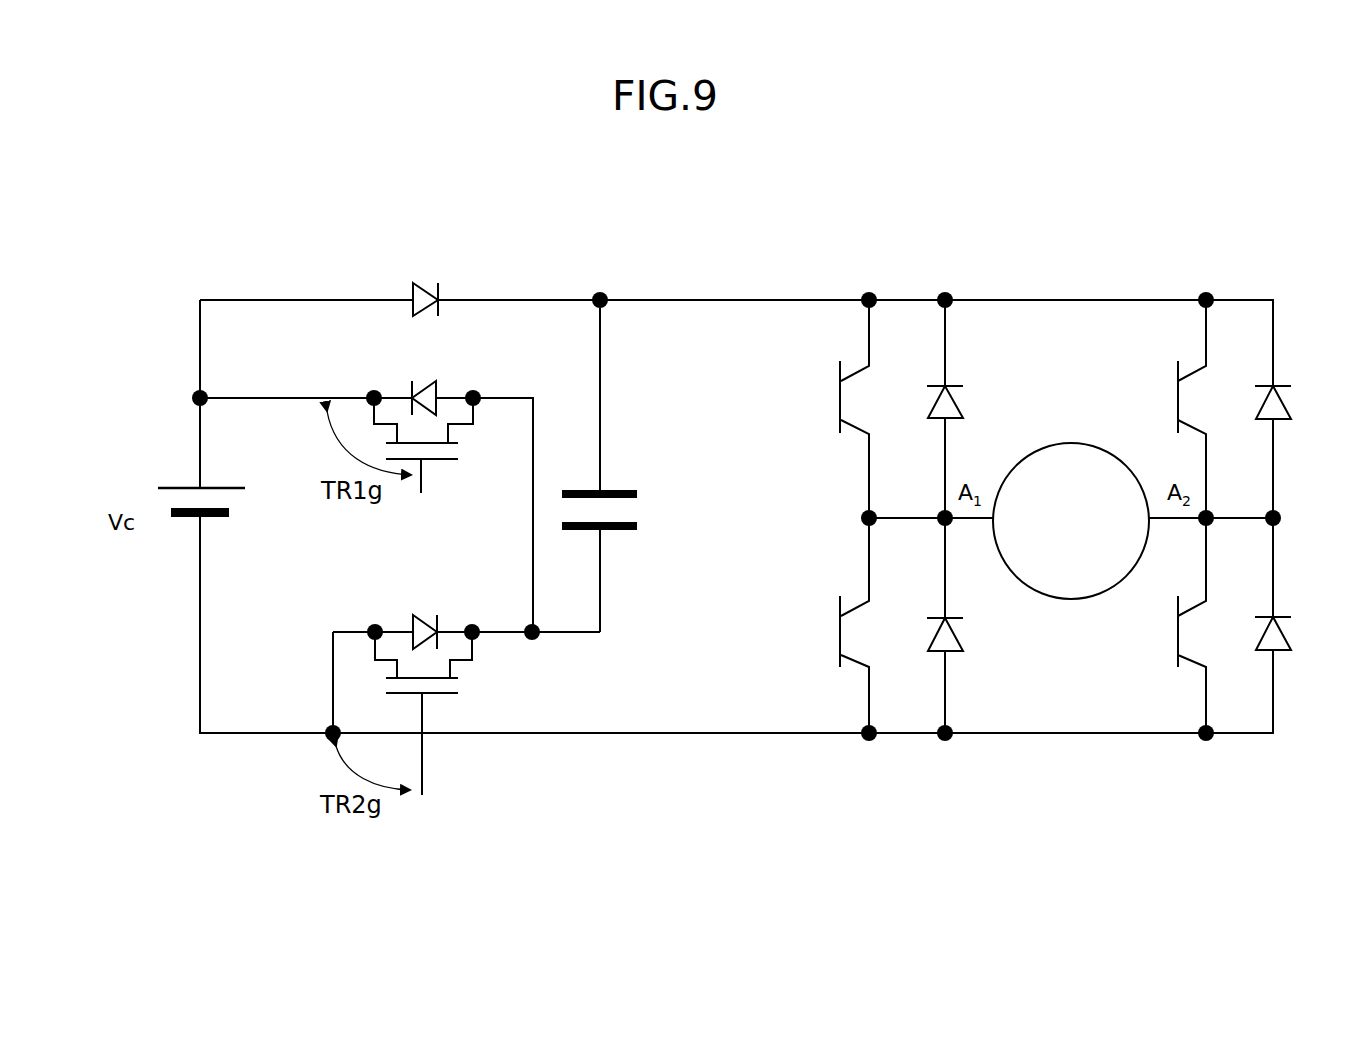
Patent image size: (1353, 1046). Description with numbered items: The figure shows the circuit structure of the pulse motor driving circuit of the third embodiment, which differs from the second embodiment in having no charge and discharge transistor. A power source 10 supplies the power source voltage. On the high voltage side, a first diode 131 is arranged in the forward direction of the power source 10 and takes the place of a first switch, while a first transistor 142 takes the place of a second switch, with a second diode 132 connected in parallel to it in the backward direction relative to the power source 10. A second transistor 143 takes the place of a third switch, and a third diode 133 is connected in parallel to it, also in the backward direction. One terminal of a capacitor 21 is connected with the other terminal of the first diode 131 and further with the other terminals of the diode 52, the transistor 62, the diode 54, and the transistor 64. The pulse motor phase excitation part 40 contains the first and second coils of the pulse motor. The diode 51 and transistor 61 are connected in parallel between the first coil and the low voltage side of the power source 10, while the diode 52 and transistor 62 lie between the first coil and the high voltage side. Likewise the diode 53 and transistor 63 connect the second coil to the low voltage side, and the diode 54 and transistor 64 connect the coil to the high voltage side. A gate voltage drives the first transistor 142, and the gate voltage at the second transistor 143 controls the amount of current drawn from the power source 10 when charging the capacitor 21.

The power source 10 is at (168, 488).
The capacitor 21 is at (628, 530).
The pulse motor phase excitation part 40 is at (1075, 442).
The diode 51 is at (955, 653).
The diode 52 is at (964, 412).
The diode 53 is at (1262, 652).
The diode 54 is at (1288, 400).
The transistor 61 is at (860, 663).
The transistor 62 is at (854, 371).
The transistor 63 is at (1196, 666).
The transistor 64 is at (1193, 371).
The first diode 131 is at (438, 285).
The second diode 132 is at (436, 383).
The third diode 133 is at (413, 618).
The first transistor 142 is at (432, 460).
The second transistor 143 is at (450, 694).